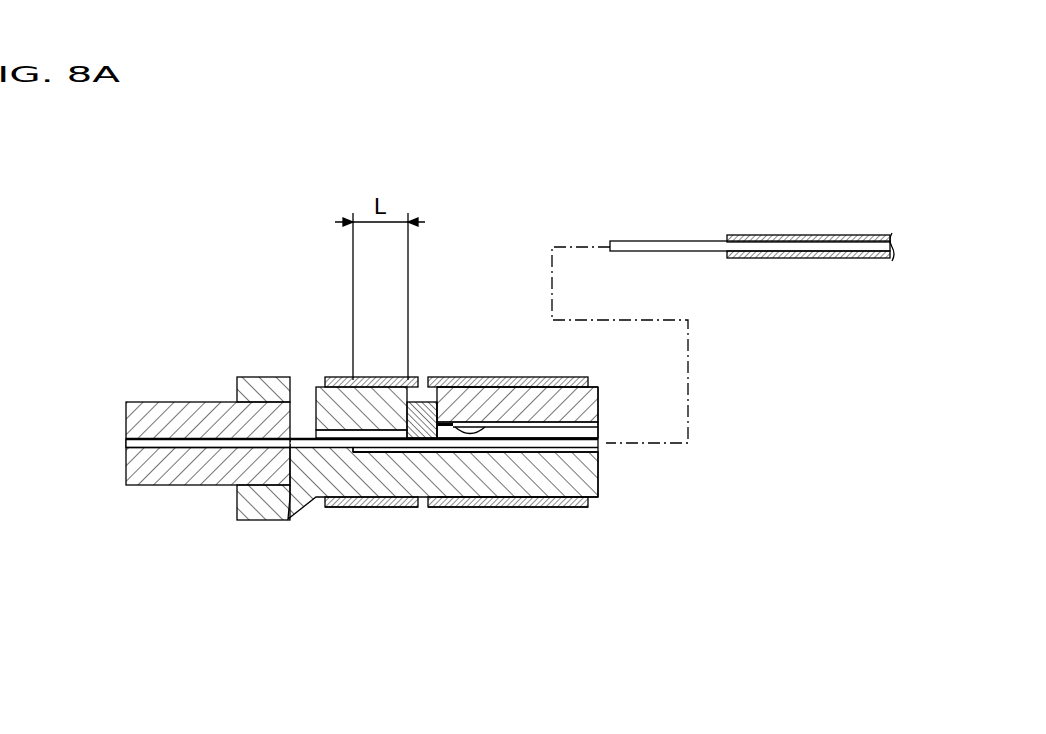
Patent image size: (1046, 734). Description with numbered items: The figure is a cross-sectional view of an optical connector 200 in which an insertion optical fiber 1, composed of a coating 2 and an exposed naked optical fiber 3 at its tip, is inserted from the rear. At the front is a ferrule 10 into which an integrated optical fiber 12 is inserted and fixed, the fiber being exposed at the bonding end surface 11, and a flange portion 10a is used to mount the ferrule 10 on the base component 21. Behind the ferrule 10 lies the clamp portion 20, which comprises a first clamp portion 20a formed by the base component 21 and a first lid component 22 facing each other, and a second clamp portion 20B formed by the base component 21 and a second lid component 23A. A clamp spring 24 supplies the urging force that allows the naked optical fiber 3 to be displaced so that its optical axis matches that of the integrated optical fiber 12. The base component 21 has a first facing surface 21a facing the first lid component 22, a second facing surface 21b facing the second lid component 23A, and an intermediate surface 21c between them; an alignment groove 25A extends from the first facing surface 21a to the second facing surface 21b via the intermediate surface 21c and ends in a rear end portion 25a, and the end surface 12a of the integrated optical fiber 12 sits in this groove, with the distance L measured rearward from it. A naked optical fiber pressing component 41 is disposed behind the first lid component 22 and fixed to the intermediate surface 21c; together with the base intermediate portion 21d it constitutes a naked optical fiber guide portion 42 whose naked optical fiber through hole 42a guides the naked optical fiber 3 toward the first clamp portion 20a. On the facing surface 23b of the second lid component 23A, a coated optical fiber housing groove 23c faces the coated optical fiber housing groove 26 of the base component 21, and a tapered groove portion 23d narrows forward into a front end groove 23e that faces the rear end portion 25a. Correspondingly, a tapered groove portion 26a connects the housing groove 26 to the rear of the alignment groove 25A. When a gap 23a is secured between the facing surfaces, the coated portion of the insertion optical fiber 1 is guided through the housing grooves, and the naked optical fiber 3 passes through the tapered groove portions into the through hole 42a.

The optical connector 200 is at (201, 282).
The ferrule 10 is at (160, 401).
The flange portion 10a is at (258, 377).
The bonding end surface 11 is at (132, 467).
The integrated optical fiber 12 is at (288, 513).
The end surface of the integrated optical fiber 12a is at (356, 498).
The clamp portion 20 is at (638, 636).
The first clamp portion 20a is at (378, 520).
The second clamp portion 20B is at (530, 520).
The base component 21 is at (545, 490).
The first facing surface 21a is at (352, 433).
The second facing surface 21b is at (520, 437).
The intermediate surface 21c is at (442, 432).
The base intermediate portion 21d is at (427, 440).
The first lid component 22 is at (316, 403).
The second lid component 23A is at (590, 404).
The gap 23a is at (578, 502).
The facing surface 23b is at (583, 380).
The coated optical fiber housing groove 23c is at (600, 426).
The tapered groove portion 23d is at (476, 424).
The front end groove 23e is at (498, 430).
The clamp spring 24 is at (378, 385).
The alignment groove 25A is at (393, 455).
The rear end portion 25a is at (458, 452).
The coated optical fiber housing groove 26 is at (585, 435).
The tapered groove portion 26a is at (490, 455).
The naked optical fiber pressing component 41 is at (421, 403).
The naked optical fiber guide portion 42 is at (487, 205).
The naked optical fiber through hole 42a is at (440, 450).
The insertion optical fiber 1 is at (822, 227).
The coating 2 is at (803, 259).
The naked optical fiber 3 is at (675, 242).